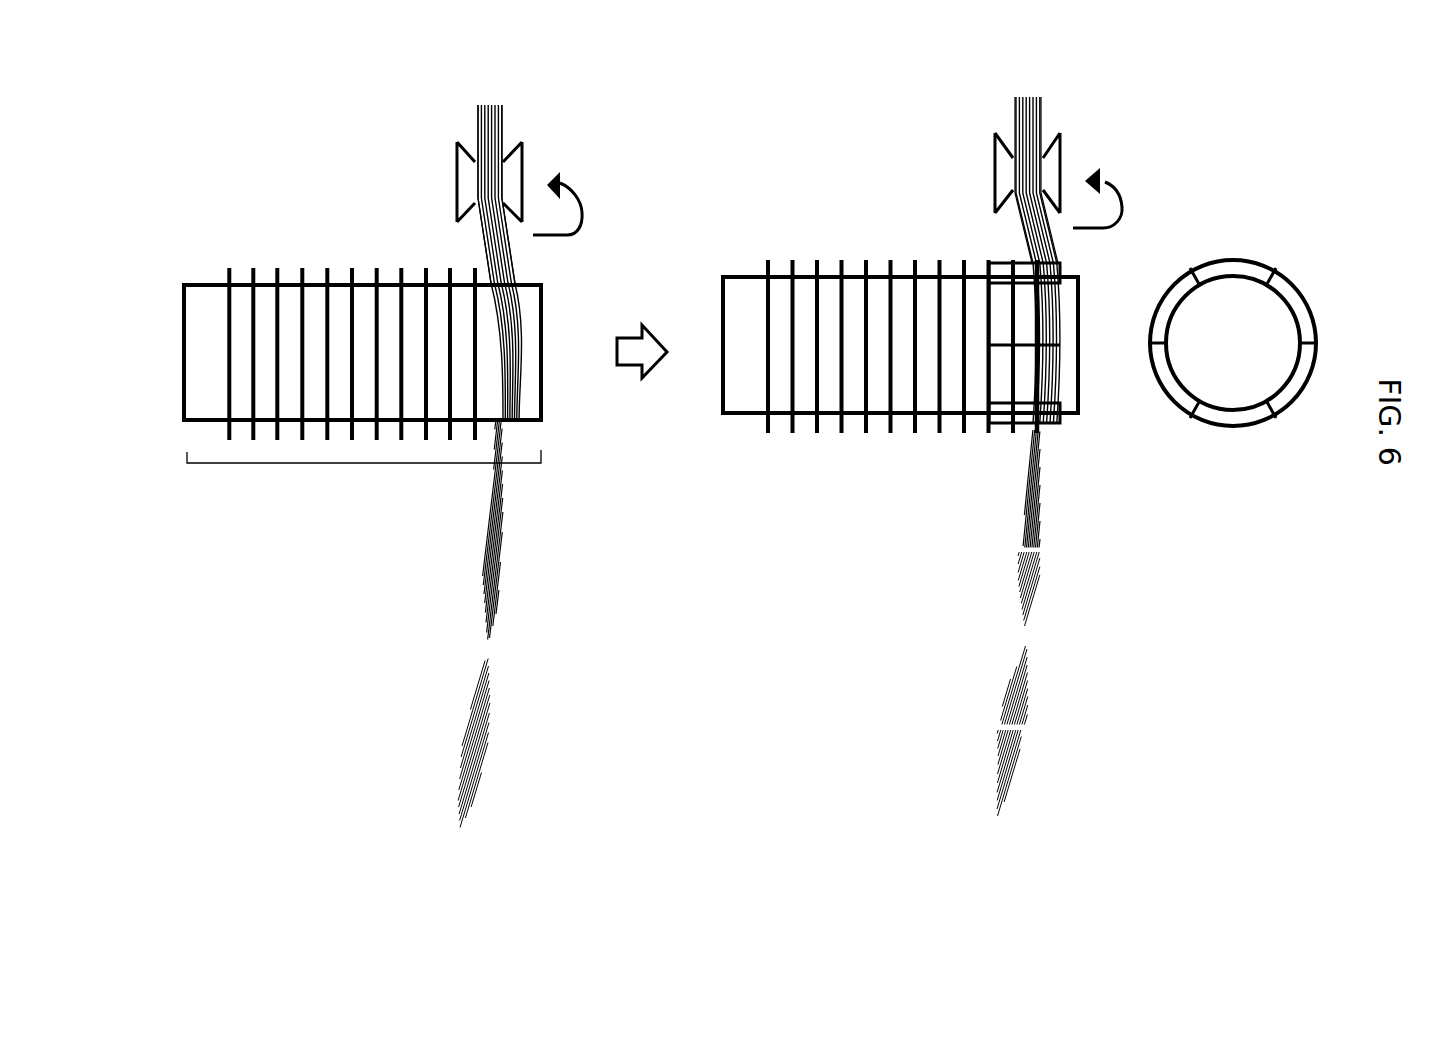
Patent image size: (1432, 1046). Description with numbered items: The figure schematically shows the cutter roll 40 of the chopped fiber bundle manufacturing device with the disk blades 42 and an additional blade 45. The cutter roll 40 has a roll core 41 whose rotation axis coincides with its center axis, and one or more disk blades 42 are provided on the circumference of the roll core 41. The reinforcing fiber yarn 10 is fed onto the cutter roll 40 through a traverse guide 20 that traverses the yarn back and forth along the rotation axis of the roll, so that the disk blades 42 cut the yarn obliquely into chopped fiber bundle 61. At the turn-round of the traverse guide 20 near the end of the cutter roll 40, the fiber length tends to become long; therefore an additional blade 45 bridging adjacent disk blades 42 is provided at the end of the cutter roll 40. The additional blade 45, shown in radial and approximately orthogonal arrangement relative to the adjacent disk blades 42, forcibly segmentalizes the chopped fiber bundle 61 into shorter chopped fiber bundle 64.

The reinforcing fiber yarn 10 is at (477, 130).
The traverse guide 20 is at (528, 163).
The cutter roll 40 is at (303, 463).
The roll core 41 is at (182, 363).
The disk blades 42 is at (353, 440).
The additional blade 45 is at (1060, 347).
The chopped fiber bundle 61 is at (498, 607).
The chopped fiber bundle 64 is at (1035, 598).